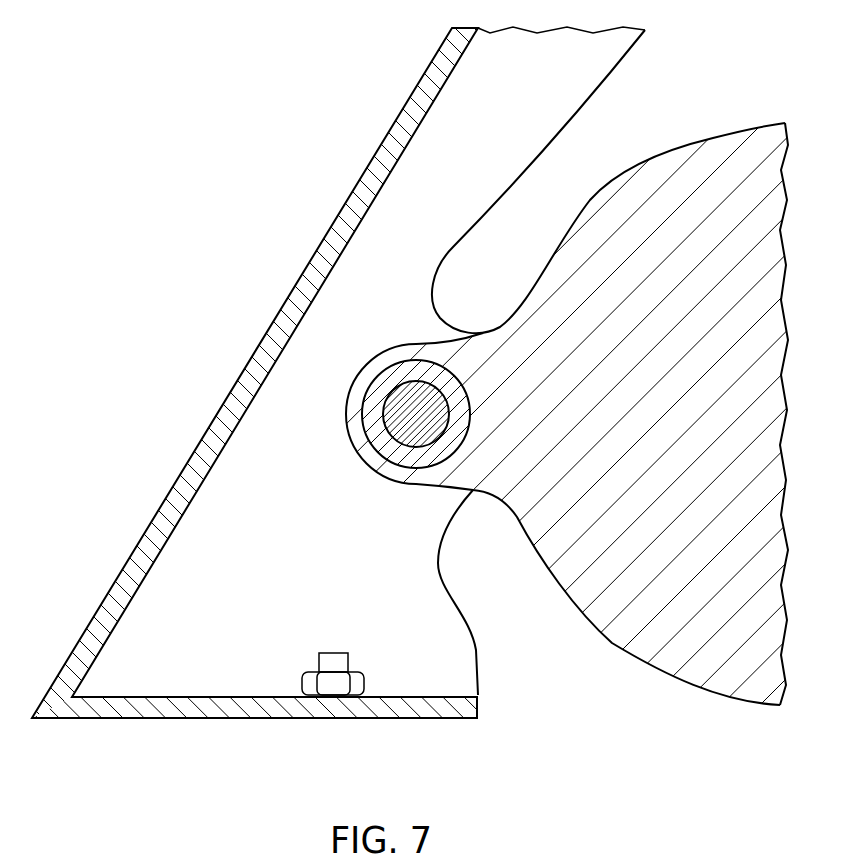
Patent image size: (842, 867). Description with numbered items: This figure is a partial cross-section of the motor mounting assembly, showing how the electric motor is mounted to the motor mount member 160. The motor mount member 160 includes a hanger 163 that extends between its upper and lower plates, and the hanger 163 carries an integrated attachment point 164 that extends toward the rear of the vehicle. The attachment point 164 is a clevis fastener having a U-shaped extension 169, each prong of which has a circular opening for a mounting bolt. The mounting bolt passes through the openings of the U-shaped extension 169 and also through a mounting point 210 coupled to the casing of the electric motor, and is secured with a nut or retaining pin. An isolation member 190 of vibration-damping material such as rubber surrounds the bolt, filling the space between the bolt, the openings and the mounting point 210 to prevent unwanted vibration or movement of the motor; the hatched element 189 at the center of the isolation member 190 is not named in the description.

The motor mount member 160 is at (300, 433).
The hanger 163 is at (192, 453).
The attachment point 164 is at (455, 312).
The U-shaped extension 169 is at (453, 513).
The pin 189 is at (388, 443).
The isolation member 190 is at (405, 368).
The mounting point 210 is at (575, 602).